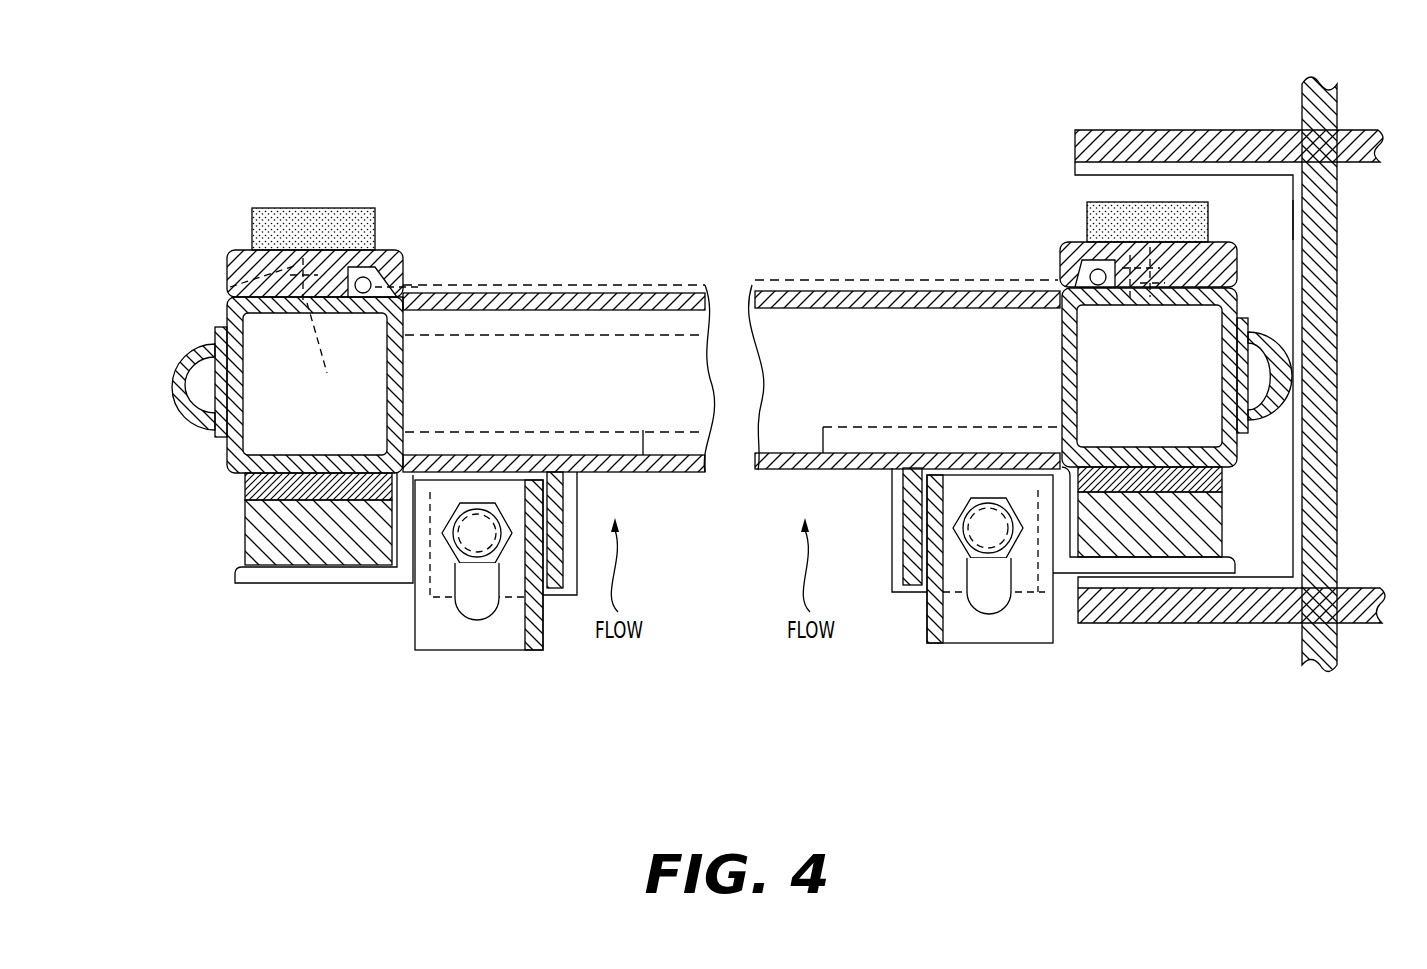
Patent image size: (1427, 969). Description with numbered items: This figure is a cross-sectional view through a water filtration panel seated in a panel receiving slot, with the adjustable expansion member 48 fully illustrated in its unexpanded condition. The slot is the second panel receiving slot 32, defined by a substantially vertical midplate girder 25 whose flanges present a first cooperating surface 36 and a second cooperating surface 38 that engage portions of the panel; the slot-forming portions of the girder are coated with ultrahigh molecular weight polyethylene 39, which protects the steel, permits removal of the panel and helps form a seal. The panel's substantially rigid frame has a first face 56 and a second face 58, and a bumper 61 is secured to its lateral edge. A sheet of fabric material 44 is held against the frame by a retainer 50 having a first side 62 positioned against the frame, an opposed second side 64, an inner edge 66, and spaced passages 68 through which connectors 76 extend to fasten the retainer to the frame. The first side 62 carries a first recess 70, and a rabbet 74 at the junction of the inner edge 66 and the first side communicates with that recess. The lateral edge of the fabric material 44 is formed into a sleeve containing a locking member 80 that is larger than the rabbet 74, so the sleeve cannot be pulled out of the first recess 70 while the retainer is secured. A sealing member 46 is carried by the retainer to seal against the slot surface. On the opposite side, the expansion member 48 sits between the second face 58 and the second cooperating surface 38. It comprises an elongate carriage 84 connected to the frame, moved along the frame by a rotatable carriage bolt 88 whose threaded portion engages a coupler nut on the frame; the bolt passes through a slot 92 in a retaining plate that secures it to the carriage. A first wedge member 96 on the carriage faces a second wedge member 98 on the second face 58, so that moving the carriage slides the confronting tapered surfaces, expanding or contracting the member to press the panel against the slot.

The midplate girder 25 is at (1360, 135).
The second panel receiving slot 32 is at (1187, 376).
The first cooperating surface 36 is at (1089, 181).
The second cooperating surface 38 is at (1282, 558).
The ultrahigh molecular weight polyethylene 39 is at (1297, 215).
The sheet of fabric material 44 is at (559, 382).
The sealing member 46 is at (262, 230).
The adjustable expansion member 48 is at (1240, 470).
The retainer 50 is at (228, 262).
The first face 56 is at (816, 272).
The second face 58 is at (677, 488).
The bumper 61 is at (180, 378).
The first side 62 is at (275, 312).
The second side 64 is at (313, 296).
The inner edge 66 is at (395, 270).
The spaced passages 68 is at (317, 330).
The first recess 70 is at (363, 295).
The rabbet 74 is at (398, 300).
The connectors 76 is at (230, 287).
The locking member 80 is at (1100, 285).
The elongate carriage 84 is at (290, 583).
The rotatable carriage bolt 88 is at (988, 555).
The slot 92 is at (477, 615).
The first wedge member 96 is at (250, 540).
The second wedge member 98 is at (248, 487).